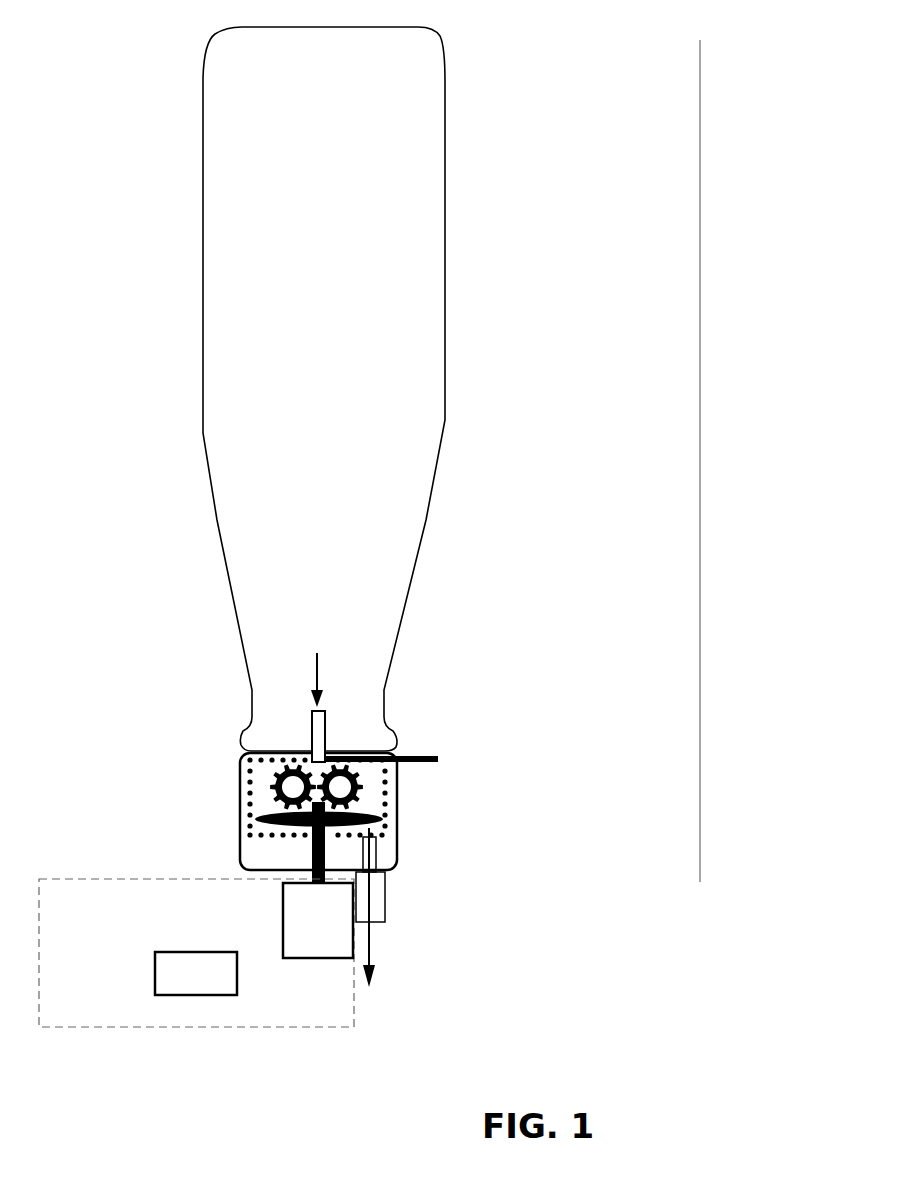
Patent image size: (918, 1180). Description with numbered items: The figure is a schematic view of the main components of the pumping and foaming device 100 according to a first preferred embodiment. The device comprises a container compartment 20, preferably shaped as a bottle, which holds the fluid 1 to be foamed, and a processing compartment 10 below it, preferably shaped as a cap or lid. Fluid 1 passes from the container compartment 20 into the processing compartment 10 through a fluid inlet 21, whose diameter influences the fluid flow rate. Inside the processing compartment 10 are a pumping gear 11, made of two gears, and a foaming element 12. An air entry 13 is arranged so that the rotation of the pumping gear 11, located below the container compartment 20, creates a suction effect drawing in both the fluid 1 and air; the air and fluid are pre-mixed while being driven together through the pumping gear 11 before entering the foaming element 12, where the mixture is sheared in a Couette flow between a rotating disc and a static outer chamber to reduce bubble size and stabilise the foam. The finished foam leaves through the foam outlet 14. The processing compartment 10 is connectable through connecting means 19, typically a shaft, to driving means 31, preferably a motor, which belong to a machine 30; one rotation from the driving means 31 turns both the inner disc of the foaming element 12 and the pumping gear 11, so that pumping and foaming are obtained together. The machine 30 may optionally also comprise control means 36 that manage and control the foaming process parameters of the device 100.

The pumping and foaming device 100 is at (700, 428).
The container compartment 20 is at (445, 324).
The fluid 1 is at (314, 658).
The processing compartment 10 is at (397, 805).
The pumping gear 11 is at (360, 783).
The foaming element 12 is at (255, 818).
The connecting means 19 is at (312, 854).
The fluid inlet 21 is at (312, 721).
The air entry 13 is at (425, 756).
The foam outlet 14 is at (385, 907).
The machine 30 is at (196, 953).
The driving means 31 is at (318, 920).
The control means 36 is at (196, 973).